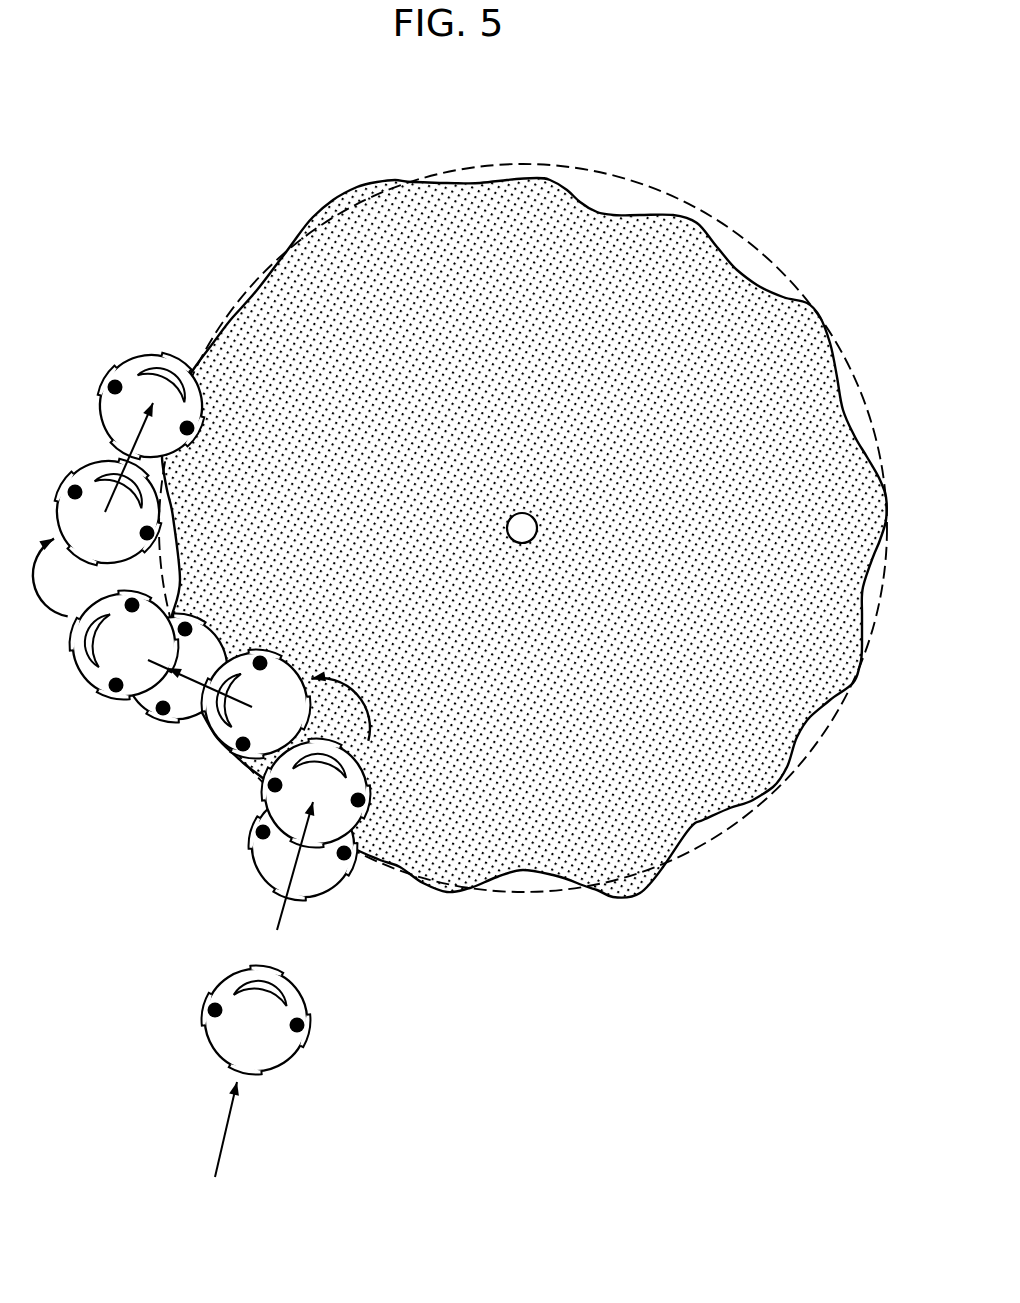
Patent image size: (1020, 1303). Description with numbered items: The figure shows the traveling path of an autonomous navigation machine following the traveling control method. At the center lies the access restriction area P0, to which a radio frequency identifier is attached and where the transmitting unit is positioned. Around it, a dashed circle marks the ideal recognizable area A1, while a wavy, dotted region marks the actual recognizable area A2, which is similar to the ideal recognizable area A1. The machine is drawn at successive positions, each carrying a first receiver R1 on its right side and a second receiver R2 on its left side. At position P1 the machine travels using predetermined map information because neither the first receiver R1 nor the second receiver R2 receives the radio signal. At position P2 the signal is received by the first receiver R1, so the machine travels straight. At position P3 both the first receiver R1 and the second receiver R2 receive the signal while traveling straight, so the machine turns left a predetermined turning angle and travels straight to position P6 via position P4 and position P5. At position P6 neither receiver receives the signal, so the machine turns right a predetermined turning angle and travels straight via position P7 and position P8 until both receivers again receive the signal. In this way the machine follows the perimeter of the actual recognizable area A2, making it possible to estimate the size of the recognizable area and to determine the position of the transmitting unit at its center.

The ideal recognizable area A1 is at (521, 165).
The actual recognizable area A2 is at (583, 200).
The access restriction area P0 is at (522, 509).
The position P1 is at (255, 1019).
The position P2 is at (302, 845).
The position P3 is at (316, 793).
The position P4 is at (256, 704).
The position P5 is at (175, 667).
The position P6 is at (123, 644).
The position P7 is at (108, 512).
The position P8 is at (151, 406).
The first receiver R1 is at (267, 735).
The second receiver R2 is at (156, 686).